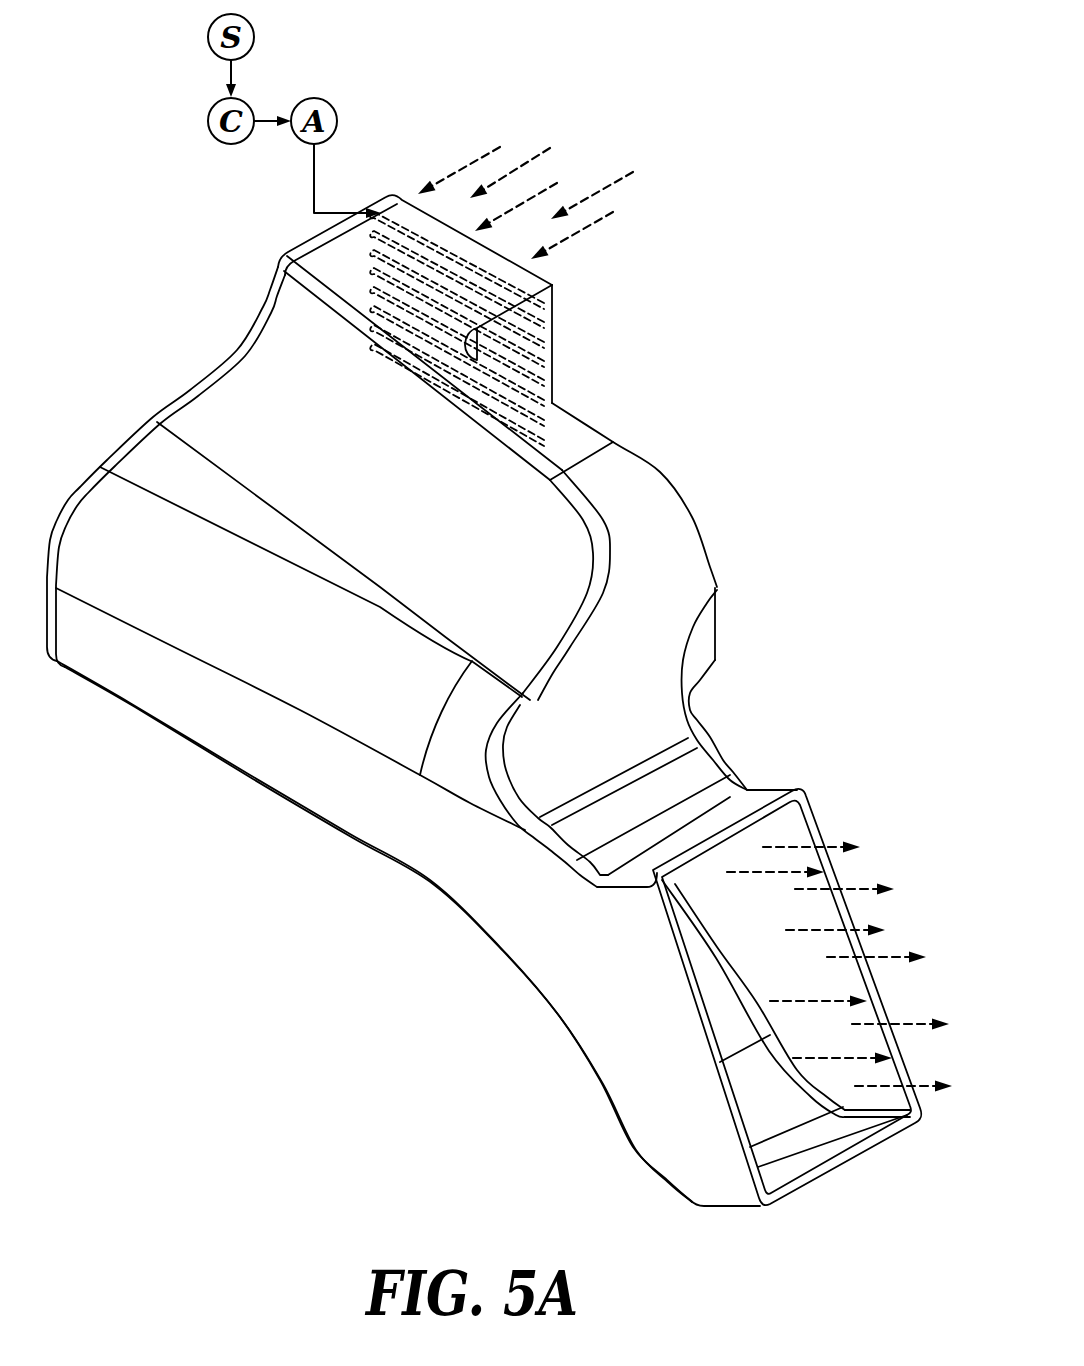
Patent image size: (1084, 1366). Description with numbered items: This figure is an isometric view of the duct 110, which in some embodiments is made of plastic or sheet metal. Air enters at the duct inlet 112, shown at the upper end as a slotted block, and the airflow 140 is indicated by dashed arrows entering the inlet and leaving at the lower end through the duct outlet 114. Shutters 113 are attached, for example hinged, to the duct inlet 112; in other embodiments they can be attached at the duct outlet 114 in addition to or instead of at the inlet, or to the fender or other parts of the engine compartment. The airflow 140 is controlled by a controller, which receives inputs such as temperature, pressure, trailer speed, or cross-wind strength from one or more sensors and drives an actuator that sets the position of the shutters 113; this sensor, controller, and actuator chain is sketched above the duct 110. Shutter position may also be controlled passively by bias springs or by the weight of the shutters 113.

The duct 110 is at (323, 773).
The duct inlet 112 is at (553, 364).
The shutters 113 is at (560, 313).
The duct outlet 114 is at (828, 1152).
The airflow 140 is at (617, 180).